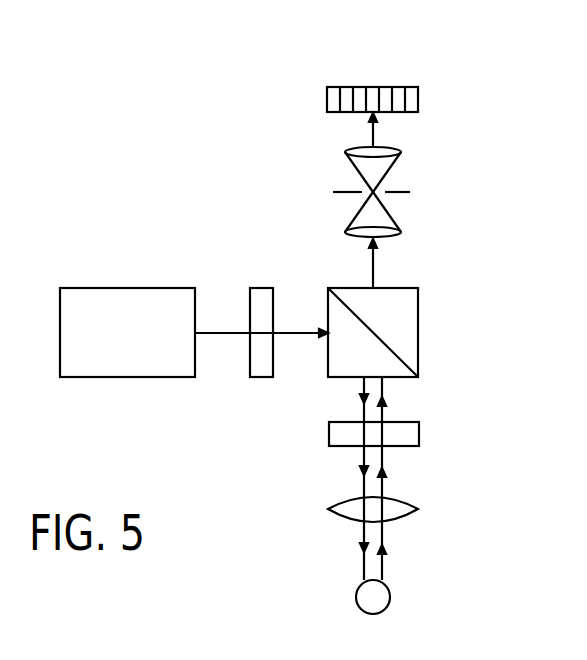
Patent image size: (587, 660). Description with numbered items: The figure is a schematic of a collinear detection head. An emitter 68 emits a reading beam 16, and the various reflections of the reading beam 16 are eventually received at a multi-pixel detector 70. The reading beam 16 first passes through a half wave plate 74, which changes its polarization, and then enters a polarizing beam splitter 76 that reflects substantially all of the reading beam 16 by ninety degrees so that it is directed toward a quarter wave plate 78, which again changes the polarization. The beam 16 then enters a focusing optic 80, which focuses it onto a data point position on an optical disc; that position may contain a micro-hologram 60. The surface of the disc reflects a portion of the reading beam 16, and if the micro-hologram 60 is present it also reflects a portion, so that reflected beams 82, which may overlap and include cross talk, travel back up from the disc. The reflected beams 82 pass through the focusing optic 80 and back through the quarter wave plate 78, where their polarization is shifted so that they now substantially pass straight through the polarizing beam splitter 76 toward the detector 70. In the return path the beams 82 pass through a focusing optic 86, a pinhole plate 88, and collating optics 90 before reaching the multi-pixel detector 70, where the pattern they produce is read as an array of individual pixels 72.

The reading beam 16 is at (227, 336).
The micro-hologram 60 is at (389, 600).
The emitter 68 is at (126, 288).
The multi-pixel detector 70 is at (400, 65).
The individual pixels 72 is at (348, 93).
The half wave plate 74 is at (262, 288).
The polarizing beam splitter 76 is at (418, 331).
The quarter wave plate 78 is at (419, 436).
The focusing optic 80 is at (418, 509).
The reflected beams 82 is at (371, 135).
The focusing optic 86 is at (400, 230).
The pinhole plate 88 is at (350, 194).
The collating optics 90 is at (400, 150).